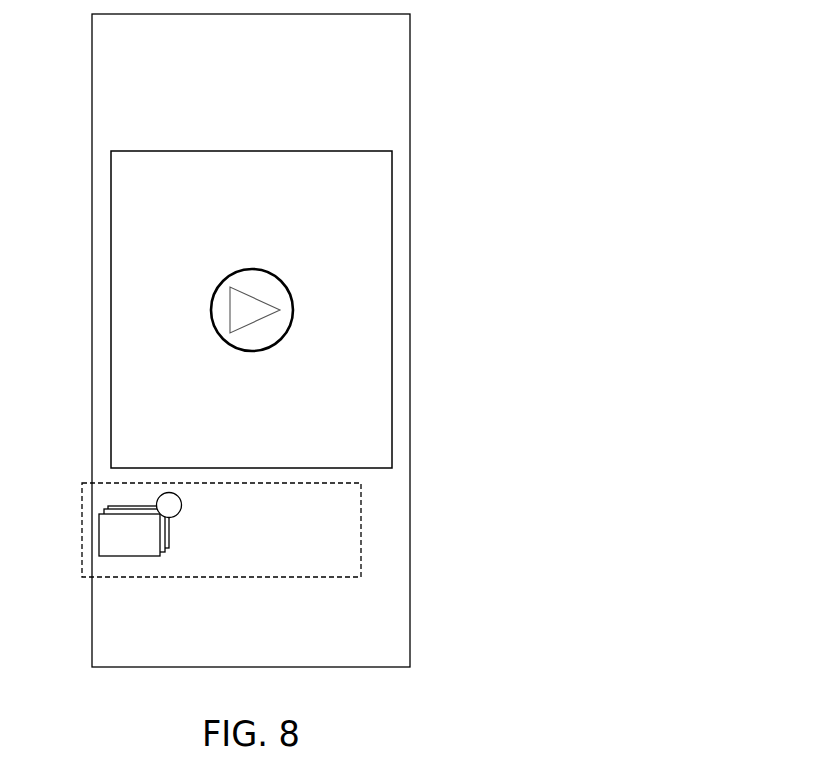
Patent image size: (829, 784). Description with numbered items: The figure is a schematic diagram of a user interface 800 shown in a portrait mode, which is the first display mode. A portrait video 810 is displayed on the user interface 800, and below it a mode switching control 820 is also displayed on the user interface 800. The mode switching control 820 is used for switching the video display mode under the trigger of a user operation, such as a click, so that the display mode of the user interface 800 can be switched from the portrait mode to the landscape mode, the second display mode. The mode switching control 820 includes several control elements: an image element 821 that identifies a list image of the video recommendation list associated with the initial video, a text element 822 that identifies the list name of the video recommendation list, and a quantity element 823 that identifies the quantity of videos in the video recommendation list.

The user interface 800 is at (290, 340).
The portrait video 810 is at (251, 297).
The mode switching control 820 is at (276, 530).
The image element 821 is at (116, 540).
The text element 822 is at (198, 572).
The quantity element 823 is at (158, 499).